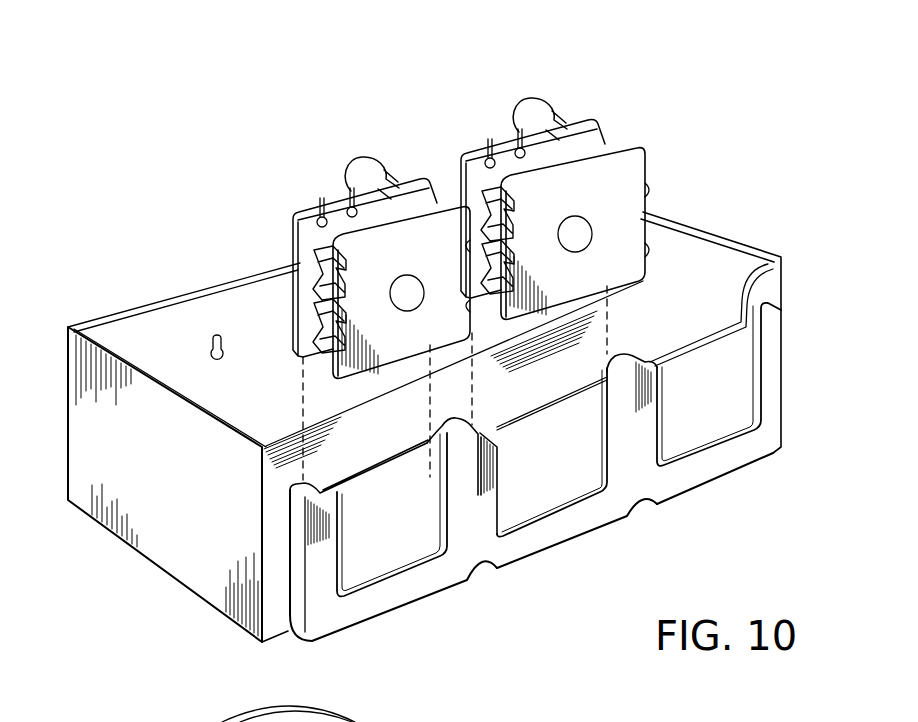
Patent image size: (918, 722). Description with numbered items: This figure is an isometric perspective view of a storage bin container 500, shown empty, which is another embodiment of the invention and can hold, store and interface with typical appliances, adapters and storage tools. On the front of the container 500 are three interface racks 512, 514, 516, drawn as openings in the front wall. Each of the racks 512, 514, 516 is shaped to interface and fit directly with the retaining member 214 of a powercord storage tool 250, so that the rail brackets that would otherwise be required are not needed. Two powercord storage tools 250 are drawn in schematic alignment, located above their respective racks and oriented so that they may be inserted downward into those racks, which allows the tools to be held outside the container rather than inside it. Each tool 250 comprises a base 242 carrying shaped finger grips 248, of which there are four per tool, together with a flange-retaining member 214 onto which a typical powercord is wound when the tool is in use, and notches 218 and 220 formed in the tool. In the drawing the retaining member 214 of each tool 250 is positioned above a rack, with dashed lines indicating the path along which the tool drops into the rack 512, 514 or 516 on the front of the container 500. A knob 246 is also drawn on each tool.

The storage bin container 500 is at (109, 567).
The rack 512 is at (397, 583).
The rack 514 is at (550, 508).
The rack 516 is at (713, 448).
The powercord storage tool 250 is at (336, 116).
The retaining member 214 is at (293, 250).
The base 242 is at (293, 254).
The shaped finger grips 248 is at (345, 287).
The notch 218 is at (322, 205).
The notch 220 is at (292, 216).
The knob 246 is at (378, 157).